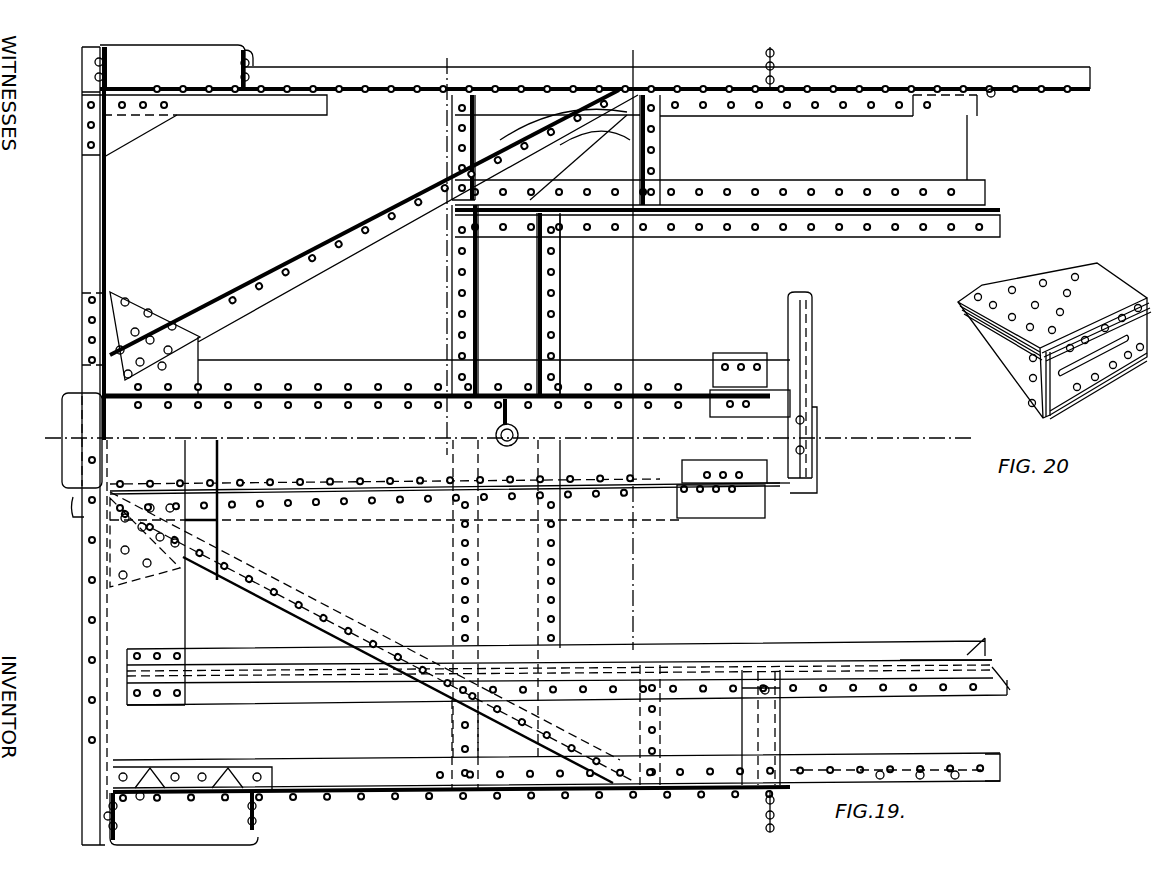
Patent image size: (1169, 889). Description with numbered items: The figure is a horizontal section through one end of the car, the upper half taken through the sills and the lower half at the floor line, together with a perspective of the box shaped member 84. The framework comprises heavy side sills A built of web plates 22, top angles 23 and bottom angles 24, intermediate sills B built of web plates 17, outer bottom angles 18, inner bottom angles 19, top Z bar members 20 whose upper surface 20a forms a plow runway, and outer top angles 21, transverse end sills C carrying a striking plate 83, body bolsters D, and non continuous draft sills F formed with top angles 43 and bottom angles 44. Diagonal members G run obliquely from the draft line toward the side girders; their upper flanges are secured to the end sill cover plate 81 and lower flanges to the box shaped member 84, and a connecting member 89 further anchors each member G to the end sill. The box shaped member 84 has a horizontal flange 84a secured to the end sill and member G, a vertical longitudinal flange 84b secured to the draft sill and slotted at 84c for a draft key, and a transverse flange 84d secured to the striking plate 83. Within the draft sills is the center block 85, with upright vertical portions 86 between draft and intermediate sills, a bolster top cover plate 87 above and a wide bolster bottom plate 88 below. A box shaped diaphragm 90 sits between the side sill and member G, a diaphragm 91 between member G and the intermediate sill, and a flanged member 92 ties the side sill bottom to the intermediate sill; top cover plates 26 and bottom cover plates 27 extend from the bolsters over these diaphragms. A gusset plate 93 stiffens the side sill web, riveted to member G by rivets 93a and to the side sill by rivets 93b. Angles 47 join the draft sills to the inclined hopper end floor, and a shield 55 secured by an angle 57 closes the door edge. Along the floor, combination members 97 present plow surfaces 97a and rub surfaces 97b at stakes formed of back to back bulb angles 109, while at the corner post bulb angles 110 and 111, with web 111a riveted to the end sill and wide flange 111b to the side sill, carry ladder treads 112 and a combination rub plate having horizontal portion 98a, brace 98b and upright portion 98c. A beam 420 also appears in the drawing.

In FIG. 19, the bulb angle 111 is at (110, 54).
In FIG. 19, the web of stake member 111 111a is at (108, 815).
In FIG. 19, the wide flange of stake member 111 111b is at (142, 793).
In FIG. 19, the ladder treads 112 is at (250, 52).
In FIG. 19, the bulb angle 110 is at (240, 56).
In FIG. 19, the top angles of side sill 23 is at (447, 58).
In FIG. 19, the rivets 93a is at (582, 110).
In FIG. 19, the bottom angles of side sill 24 is at (955, 75).
In FIG. 19, the bulb angles 109 is at (771, 48).
In FIG. 19, the web plates of side sill 22 is at (1062, 82).
In FIG. 19, the rivets 93b is at (995, 95).
In FIG. 19, the box shaped flanged diaphragm 90 is at (455, 143).
In FIG. 19, the gusset plate 93 is at (457, 160).
In FIG. 19, the diaphragm 91 is at (662, 145).
In FIG. 19, the flanged member 92 is at (662, 161).
In FIG. 19, the bottom cover plates 27 is at (945, 146).
In FIG. 19, the outer bottom angles 18 is at (985, 193).
In FIG. 19, the web plates 17 is at (1000, 210).
In FIG. 19, the inner bottom angles 19 is at (998, 226).
In FIG. 19, the connecting member 89 is at (150, 310).
In FIG. 19, the vertical transversely disposed flange 84d is at (88, 340).
In FIG. 20, the vertical transversely disposed flange 84d is at (1012, 357).
In FIG. 19, the horizontal flange 84a is at (188, 356).
In FIG. 20, the horizontal flange 84a is at (1030, 283).
In FIG. 19, the vertically and longitudinally extending flange 84b is at (150, 382).
In FIG. 20, the vertically and longitudinally extending flange 84b is at (1050, 363).
In FIG. 20, the slot 84c is at (1073, 367).
In FIG. 20, the box shaped member 84 is at (1050, 403).
In FIG. 19, the striking plate 83 is at (62, 410).
In FIG. 19, the upright vertical portions 86 is at (538, 290).
In FIG. 19, the bolster bottom plate 88 is at (618, 309).
In FIG. 19, the end wall or shield 55 is at (773, 355).
In FIG. 19, the angle 57 is at (820, 410).
In FIG. 19, the angles 47 is at (728, 412).
In FIG. 19, the center block 85 is at (500, 410).
In FIG. 19, the beam 420 is at (330, 478).
In FIG. 19, the top angles of draft sills 43 is at (700, 503).
In FIG. 19, the bottom angles of draft sills 44 is at (775, 512).
In FIG. 19, the bolster top cover plate 87 is at (220, 540).
In FIG. 19, the end sill cover plate 81 is at (168, 640).
In FIG. 19, the top Z bar members 20 is at (985, 640).
In FIG. 19, the upper surface of the Z bar 20a is at (947, 676).
In FIG. 19, the outer top angles 21 is at (1010, 690).
In FIG. 19, the top cover plates 26 is at (768, 692).
In FIG. 19, the combination member 97 is at (748, 728).
In FIG. 19, the surface 97a is at (780, 773).
In FIG. 19, the inner surface 97b is at (815, 765).
In FIG. 19, the horizontal portion 98a is at (272, 768).
In FIG. 19, the reinforcing brace 98b is at (158, 770).
In FIG. 19, the upright rub plate portion 98c is at (245, 770).
In FIG. 19, the side sills A is at (390, 84).
In FIG. 19, the intermediate longitudinal sills B is at (742, 215).
In FIG. 19, the end sills C is at (105, 232).
In FIG. 19, the body bolsters D is at (615, 590).
In FIG. 19, the draft sills F is at (105, 447).
In FIG. 19, the diagonal members G is at (296, 288).